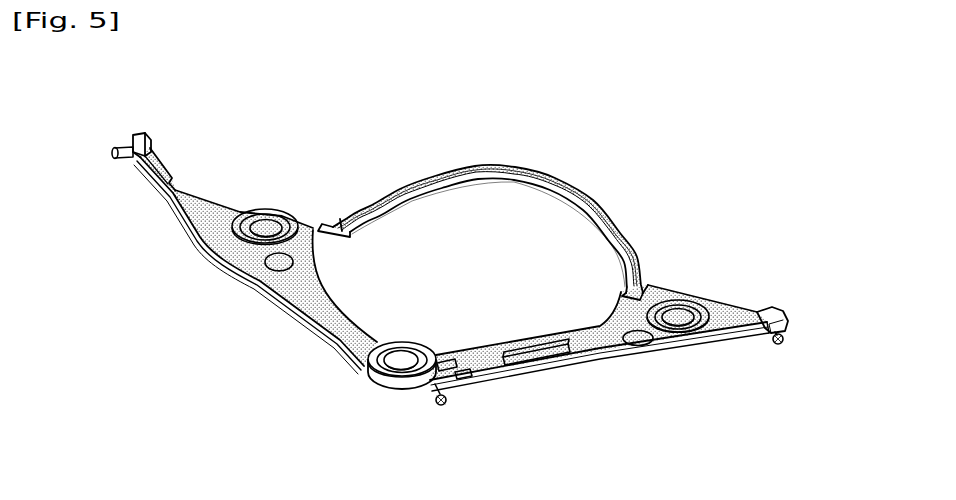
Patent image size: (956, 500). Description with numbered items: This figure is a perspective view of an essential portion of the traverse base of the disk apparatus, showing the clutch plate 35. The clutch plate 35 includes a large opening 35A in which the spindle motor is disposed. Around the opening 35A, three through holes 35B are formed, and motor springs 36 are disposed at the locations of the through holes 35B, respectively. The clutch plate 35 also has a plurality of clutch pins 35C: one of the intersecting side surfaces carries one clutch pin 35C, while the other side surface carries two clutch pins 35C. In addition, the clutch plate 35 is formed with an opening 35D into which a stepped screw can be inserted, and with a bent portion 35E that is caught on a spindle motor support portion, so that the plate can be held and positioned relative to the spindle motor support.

The clutch plate 35 is at (468, 167).
The opening 35A is at (545, 220).
The through holes 35B is at (265, 228).
The clutch pins 35C is at (118, 162).
The opening 35D is at (283, 271).
The bent portion 35E is at (463, 378).
The motor springs 36 is at (220, 248).